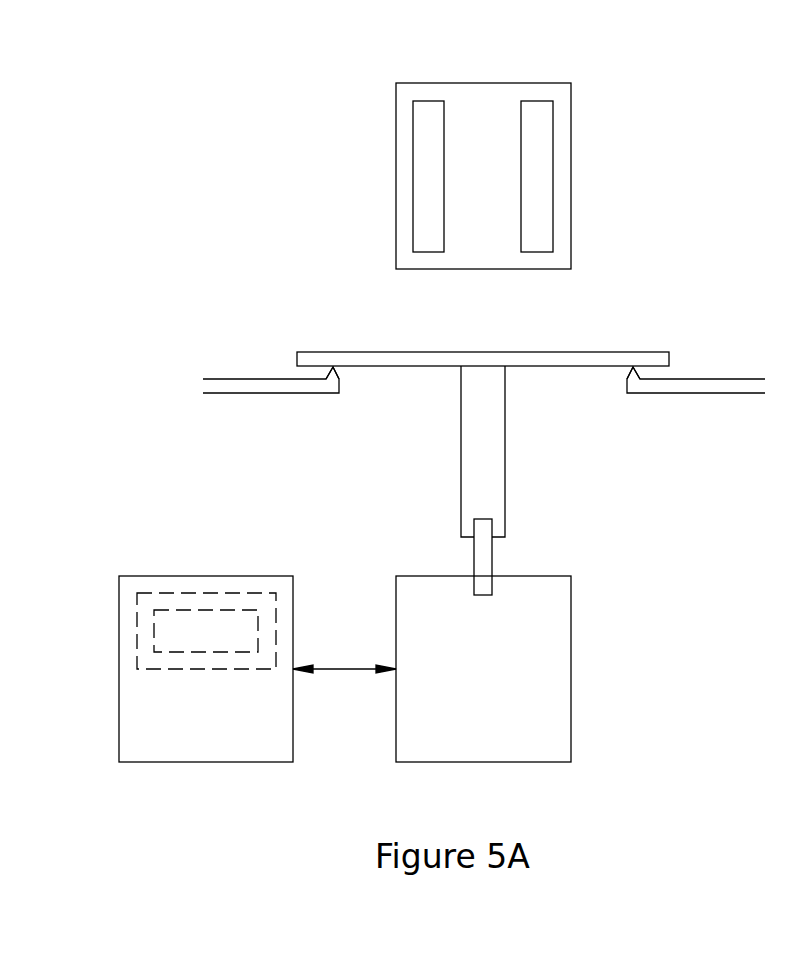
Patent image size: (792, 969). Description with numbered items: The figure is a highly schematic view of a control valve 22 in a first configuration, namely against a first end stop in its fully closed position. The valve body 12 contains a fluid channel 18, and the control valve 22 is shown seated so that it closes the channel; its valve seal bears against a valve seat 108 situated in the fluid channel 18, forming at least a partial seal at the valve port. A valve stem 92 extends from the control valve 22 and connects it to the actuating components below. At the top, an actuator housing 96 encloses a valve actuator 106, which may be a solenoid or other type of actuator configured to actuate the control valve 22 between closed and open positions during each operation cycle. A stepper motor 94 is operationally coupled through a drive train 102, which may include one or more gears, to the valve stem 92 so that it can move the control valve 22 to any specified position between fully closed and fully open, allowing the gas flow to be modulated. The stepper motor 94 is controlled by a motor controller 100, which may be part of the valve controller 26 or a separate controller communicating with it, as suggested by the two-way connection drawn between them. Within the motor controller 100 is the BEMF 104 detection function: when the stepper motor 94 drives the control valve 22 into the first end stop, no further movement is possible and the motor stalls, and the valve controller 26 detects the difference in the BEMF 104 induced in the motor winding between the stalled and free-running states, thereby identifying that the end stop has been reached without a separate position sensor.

The coil housing 96 is at (484, 83).
The valve actuator 106 is at (554, 177).
The control valve 22 is at (543, 352).
The valve seat 108 is at (333, 367).
The fluid channel 18 is at (395, 386).
The valve body 12 is at (680, 393).
The valve stem 92 is at (505, 452).
The drive train 102 is at (492, 556).
The stepper motor 94 is at (571, 667).
The valve controller 26 is at (119, 713).
The motor controller 100 is at (137, 630).
The BEMF 104 is at (204, 610).